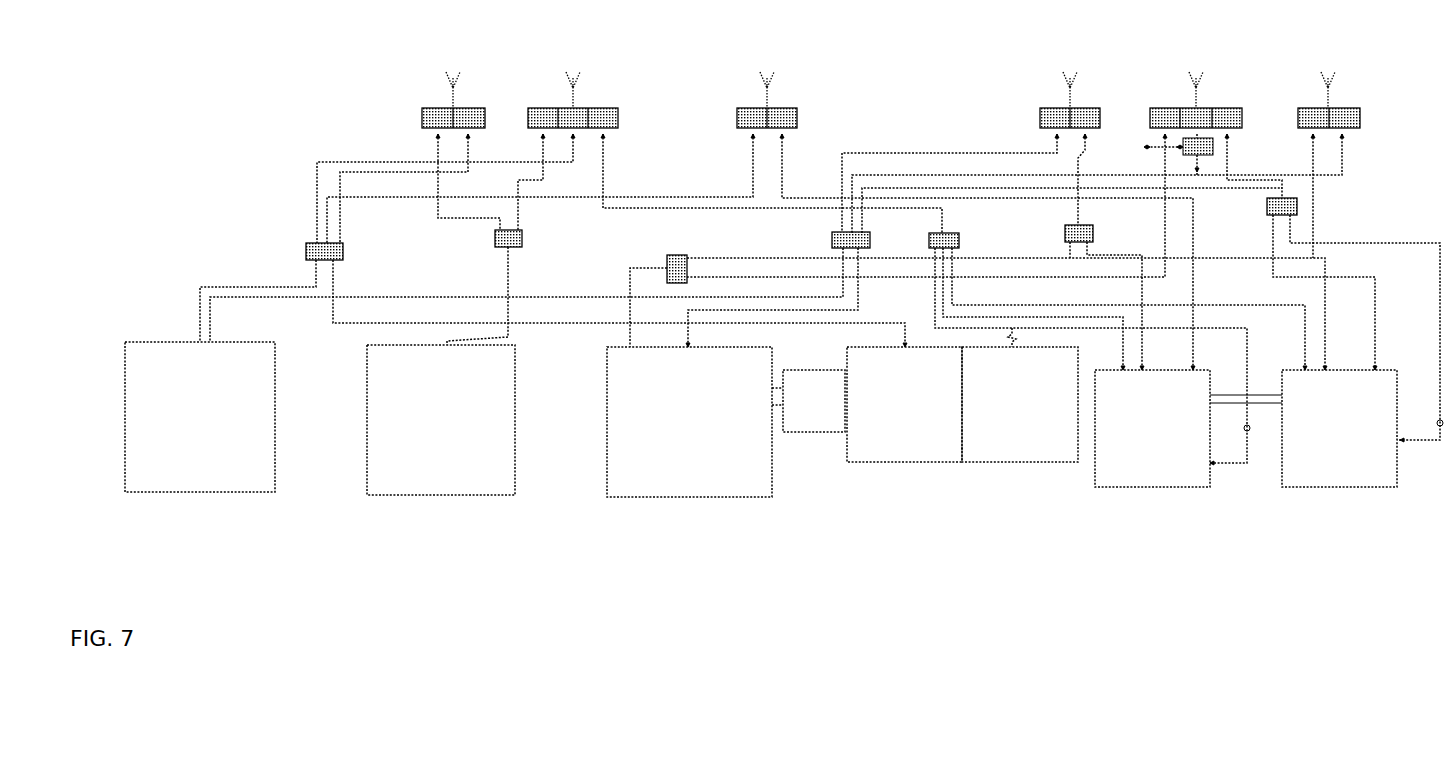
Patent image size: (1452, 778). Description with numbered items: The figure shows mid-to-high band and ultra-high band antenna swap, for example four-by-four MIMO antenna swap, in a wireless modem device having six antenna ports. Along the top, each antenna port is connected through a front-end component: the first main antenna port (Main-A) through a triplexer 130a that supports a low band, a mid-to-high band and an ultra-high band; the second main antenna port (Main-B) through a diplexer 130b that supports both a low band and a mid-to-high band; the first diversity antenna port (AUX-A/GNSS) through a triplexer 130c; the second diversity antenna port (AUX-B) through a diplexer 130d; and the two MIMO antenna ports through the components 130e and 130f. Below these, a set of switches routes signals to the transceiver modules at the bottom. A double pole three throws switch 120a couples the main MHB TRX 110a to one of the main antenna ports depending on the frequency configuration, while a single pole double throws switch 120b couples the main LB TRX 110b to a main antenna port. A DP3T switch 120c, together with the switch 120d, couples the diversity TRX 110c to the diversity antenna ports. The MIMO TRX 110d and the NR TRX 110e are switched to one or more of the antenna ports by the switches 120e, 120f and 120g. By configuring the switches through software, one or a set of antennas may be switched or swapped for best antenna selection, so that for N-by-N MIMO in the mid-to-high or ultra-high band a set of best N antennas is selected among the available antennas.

The main MHB TRX 110a is at (190, 492).
The main LB TRX 110b is at (442, 495).
The diversity TRX 110c is at (690, 497).
The MIMO TRX 110d is at (905, 462).
The NR TRX 110e is at (1143, 487).
The double pole three throws (DP3T) switch 120a is at (343, 250).
The single pole double throws (SPDT) switch 120b is at (495, 243).
The DP3T switch 120c is at (832, 240).
The switch 120d is at (667, 262).
The switch 120e is at (958, 236).
The switch 120f is at (1090, 232).
The switch 120g is at (1268, 208).
The triplexer 130a is at (598, 108).
The diplexer 130b is at (438, 108).
The triplexer 130c is at (1213, 108).
The diplexer 130d is at (1342, 108).
The antenna port front-end component 130e is at (785, 108).
The antenna port front-end component 130f is at (1043, 108).